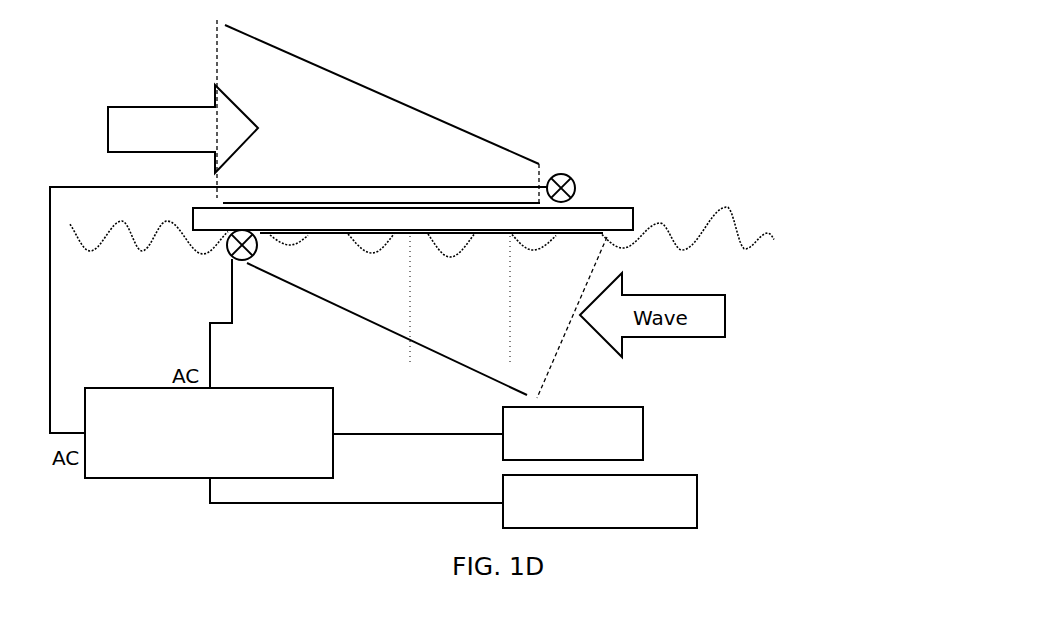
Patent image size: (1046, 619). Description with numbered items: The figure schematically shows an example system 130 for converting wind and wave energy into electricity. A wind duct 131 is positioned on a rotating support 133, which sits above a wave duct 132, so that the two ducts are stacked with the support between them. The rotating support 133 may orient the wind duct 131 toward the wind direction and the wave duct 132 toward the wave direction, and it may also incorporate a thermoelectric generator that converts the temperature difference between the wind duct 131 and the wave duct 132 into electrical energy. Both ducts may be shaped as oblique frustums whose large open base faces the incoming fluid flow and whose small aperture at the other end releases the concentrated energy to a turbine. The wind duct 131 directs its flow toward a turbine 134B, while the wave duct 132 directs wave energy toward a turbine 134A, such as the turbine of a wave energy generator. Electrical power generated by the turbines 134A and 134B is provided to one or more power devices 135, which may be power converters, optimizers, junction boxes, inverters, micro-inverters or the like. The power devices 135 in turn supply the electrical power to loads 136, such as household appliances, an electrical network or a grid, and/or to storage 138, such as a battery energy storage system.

The system 130 is at (195, 92).
The wind duct 131 is at (431, 162).
The wave duct 132 is at (525, 288).
The rotating support 133 is at (567, 214).
The turbine 134A is at (248, 265).
The turbine 134B is at (567, 174).
The power devices 135 is at (191, 462).
The loads 136 is at (621, 441).
The storage 138 is at (661, 509).